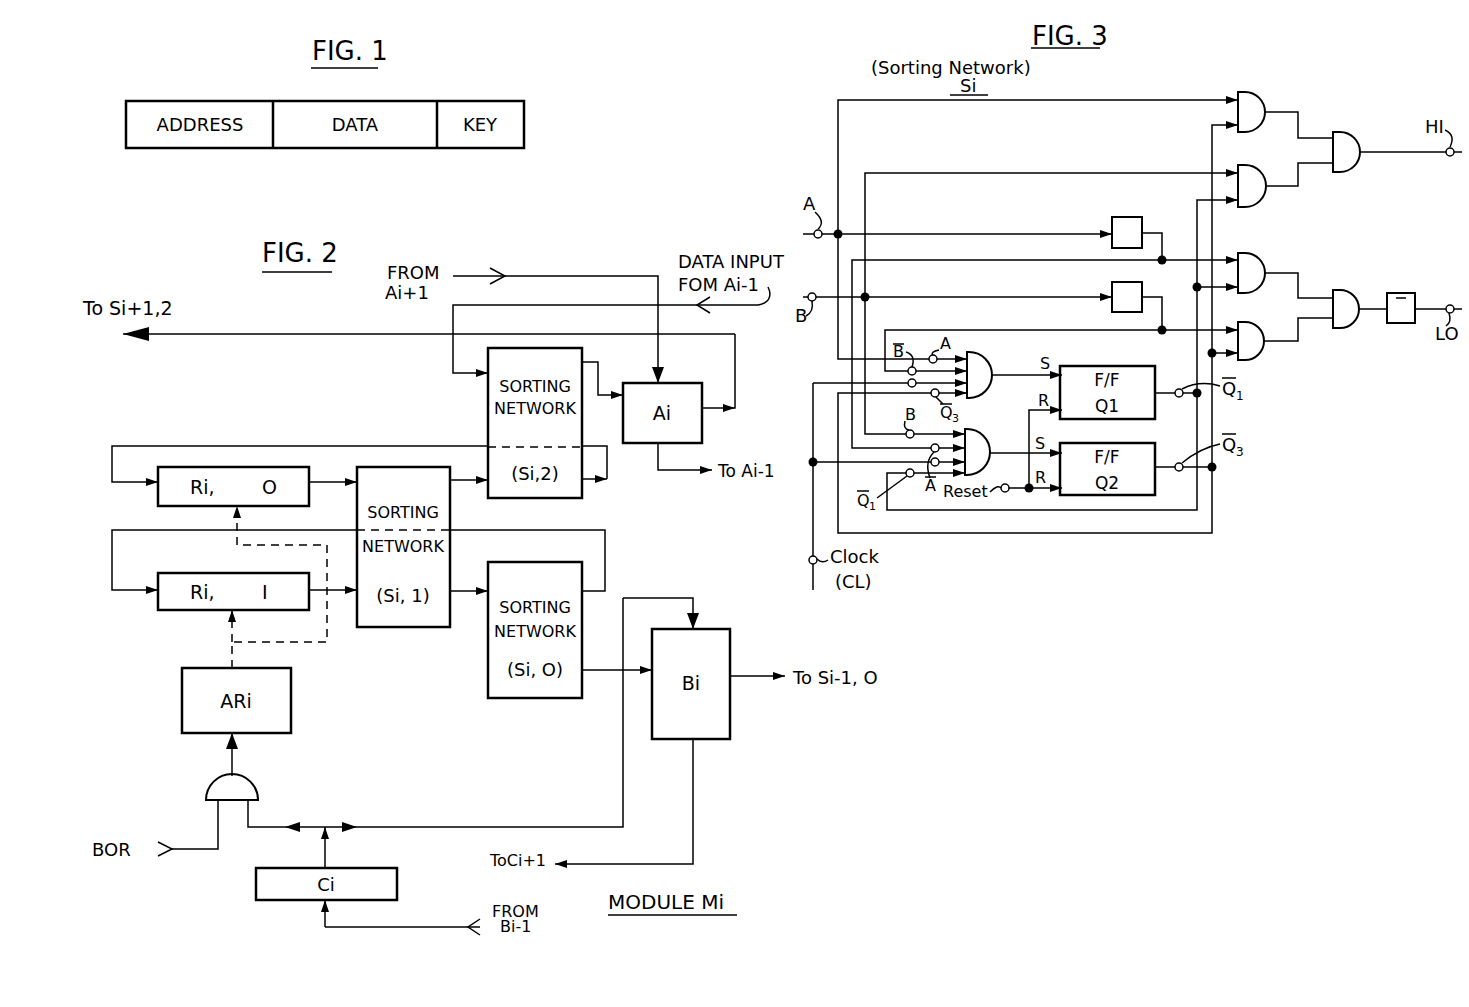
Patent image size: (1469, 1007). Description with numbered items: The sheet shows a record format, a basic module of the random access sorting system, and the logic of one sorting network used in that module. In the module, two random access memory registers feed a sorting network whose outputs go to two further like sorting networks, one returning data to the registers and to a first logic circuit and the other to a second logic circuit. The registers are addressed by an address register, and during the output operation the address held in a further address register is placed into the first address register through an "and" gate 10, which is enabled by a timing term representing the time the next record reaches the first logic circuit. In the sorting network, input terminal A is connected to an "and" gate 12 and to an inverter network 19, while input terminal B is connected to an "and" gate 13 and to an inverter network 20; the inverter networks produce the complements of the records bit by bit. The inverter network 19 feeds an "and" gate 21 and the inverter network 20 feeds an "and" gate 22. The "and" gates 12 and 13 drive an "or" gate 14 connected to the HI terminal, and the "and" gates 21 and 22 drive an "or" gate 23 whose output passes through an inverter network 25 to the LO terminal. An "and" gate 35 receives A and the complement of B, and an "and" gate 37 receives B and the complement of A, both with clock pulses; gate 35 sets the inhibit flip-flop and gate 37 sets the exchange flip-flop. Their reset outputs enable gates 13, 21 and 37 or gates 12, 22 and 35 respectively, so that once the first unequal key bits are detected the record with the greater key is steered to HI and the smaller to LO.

In FIG. 2, the "and" gate 10 is at (212, 795).
In FIG. 3, the "and" gate 12 is at (1248, 96).
In FIG. 3, the "and" gate 13 is at (1248, 170).
In FIG. 3, the "or" gate 14 is at (1343, 138).
In FIG. 3, the inverter network 19 is at (1112, 219).
In FIG. 3, the inverter network 20 is at (1112, 284).
In FIG. 3, the "and" gate 21 is at (1250, 258).
In FIG. 3, the "and" gate 22 is at (1250, 328).
In FIG. 3, the "or" gate 23 is at (1345, 294).
In FIG. 3, the inverter network 25 is at (1400, 293).
In FIG. 3, the "and" gate 35 is at (986, 359).
In FIG. 3, the "and" gate 37 is at (982, 436).